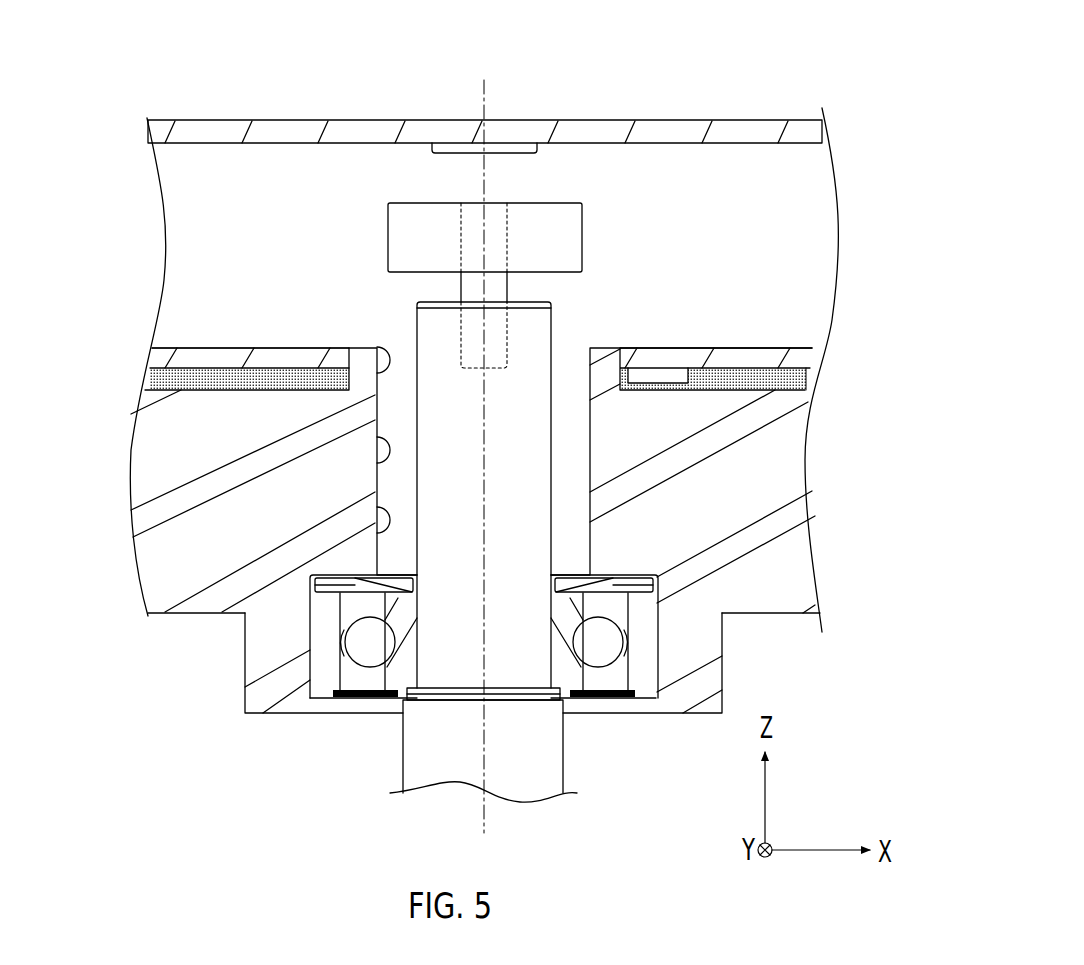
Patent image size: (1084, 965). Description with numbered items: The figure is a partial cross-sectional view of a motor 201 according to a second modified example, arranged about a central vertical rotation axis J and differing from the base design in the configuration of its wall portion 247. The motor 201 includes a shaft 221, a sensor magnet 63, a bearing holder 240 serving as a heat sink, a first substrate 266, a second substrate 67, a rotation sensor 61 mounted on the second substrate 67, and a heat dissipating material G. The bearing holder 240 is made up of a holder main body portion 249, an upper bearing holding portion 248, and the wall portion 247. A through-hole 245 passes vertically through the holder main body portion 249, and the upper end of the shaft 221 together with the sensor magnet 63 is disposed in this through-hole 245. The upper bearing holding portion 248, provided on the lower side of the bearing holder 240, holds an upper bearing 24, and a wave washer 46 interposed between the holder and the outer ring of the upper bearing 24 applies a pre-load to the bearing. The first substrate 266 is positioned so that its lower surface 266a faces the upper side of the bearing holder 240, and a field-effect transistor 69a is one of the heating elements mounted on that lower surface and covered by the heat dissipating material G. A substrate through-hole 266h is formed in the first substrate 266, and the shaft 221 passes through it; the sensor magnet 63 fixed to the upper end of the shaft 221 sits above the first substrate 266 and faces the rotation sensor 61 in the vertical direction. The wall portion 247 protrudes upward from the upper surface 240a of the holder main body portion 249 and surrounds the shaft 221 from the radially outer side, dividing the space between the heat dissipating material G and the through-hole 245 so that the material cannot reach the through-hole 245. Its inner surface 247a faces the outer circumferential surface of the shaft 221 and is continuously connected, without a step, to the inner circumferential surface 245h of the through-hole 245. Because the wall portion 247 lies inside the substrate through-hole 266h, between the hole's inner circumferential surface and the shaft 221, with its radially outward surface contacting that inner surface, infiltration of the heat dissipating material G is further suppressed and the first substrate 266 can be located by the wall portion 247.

The motor 201 is at (486, 428).
The rotation sensor 61 is at (510, 146).
The second substrate 67 is at (815, 130).
The sensor magnet 63 is at (570, 237).
The wall portion 247 is at (360, 372).
The inner surface 247a is at (393, 360).
The substrate through-hole 266h is at (362, 347).
The heat dissipating material G is at (207, 362).
The through-hole 245 is at (377, 530).
The inner circumferential surface 245h is at (395, 462).
The first substrate 266 is at (745, 365).
The lower surface 266a is at (805, 360).
The field-effect transistor 69a is at (655, 372).
The bearing holder 240 is at (792, 459).
The upper surface 240a is at (760, 373).
The holder main body portion 249 is at (720, 492).
The wave washer 46 is at (640, 578).
The upper bearing holding portion 248 is at (258, 660).
The upper bearing 24 is at (372, 660).
The shaft 221 is at (555, 748).
The rotation axis J is at (490, 822).